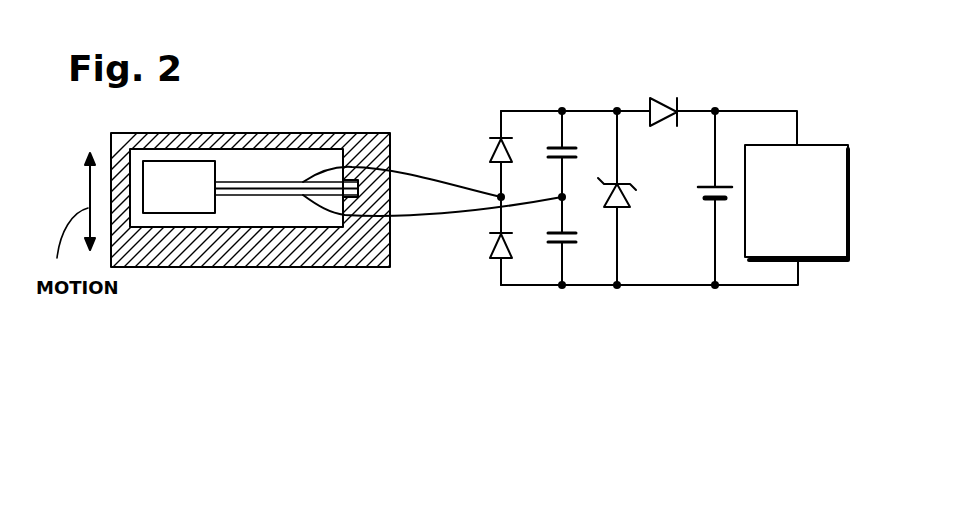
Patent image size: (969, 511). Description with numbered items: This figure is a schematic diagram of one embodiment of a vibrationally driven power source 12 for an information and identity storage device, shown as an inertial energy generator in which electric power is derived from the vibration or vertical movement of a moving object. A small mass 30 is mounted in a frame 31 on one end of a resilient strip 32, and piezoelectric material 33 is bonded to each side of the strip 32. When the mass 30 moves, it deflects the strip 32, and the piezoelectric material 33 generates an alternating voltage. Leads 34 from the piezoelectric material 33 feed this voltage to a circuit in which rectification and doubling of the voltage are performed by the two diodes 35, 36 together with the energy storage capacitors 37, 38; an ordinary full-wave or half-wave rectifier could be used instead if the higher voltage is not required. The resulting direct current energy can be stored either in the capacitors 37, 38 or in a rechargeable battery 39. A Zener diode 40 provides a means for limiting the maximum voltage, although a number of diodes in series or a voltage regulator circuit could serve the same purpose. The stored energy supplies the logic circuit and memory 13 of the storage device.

The power source 12 is at (412, 130).
The logic circuit and memory 13 is at (832, 143).
The mass 30 is at (185, 161).
The frame 31 is at (343, 255).
The resilient strip 32 is at (257, 196).
The piezoelectric material 33 is at (260, 182).
The leads 34 is at (452, 195).
The diode 35 is at (495, 150).
The diode 36 is at (491, 262).
The energy storage capacitor 37 is at (544, 152).
The energy storage capacitor 38 is at (548, 238).
The rechargeable battery 39 is at (695, 197).
The Zener diode 40 is at (620, 210).